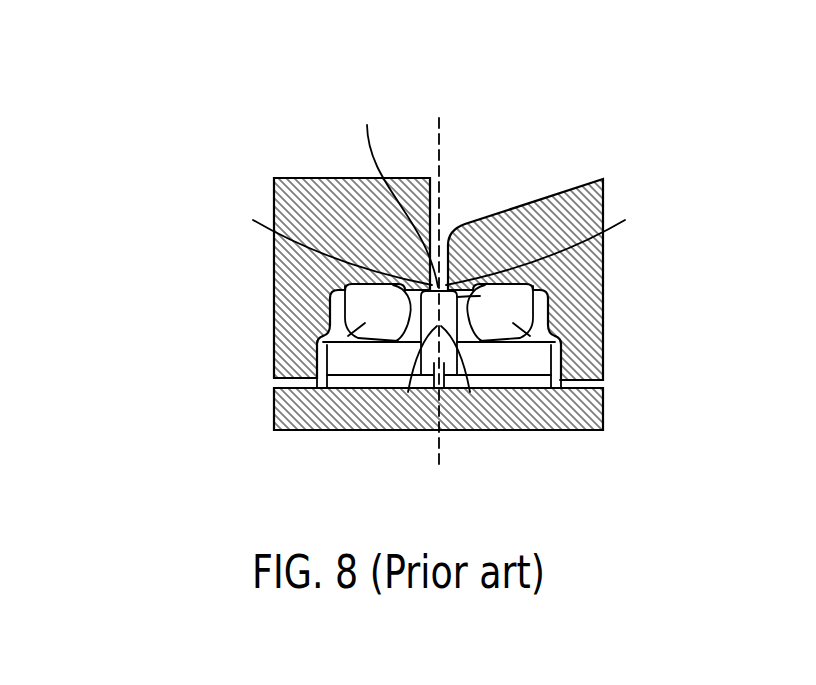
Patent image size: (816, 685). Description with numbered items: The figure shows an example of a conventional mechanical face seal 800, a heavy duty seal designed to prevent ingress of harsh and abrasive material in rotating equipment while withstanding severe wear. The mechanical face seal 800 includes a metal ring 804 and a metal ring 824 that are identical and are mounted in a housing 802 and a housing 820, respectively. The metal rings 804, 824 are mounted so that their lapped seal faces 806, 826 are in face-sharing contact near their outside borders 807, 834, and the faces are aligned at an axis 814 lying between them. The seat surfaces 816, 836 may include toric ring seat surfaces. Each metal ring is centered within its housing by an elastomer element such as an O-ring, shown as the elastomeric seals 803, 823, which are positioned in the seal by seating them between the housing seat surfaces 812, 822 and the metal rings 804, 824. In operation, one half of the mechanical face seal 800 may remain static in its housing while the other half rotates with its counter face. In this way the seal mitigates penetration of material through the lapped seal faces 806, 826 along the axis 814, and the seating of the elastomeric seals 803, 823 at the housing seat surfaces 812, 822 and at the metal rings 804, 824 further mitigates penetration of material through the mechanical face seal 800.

The mechanical face seal 800 is at (118, 27).
The housing 802 is at (312, 196).
The elastomeric seal 803 is at (318, 339).
The metal ring 804 is at (274, 377).
The lapped seal face 806 is at (408, 392).
The outside border 807 is at (327, 242).
The housing seat surface 812 is at (332, 294).
The axis 814 is at (443, 185).
The seat surface 816 is at (421, 297).
The housing 820 is at (563, 195).
The housing seat surface 822 is at (546, 294).
The elastomeric seal 823 is at (560, 340).
The metal ring 824 is at (663, 400).
The lapped seal face 826 is at (470, 392).
The outside border 834 is at (551, 242).
The seat surface 836 is at (457, 297).